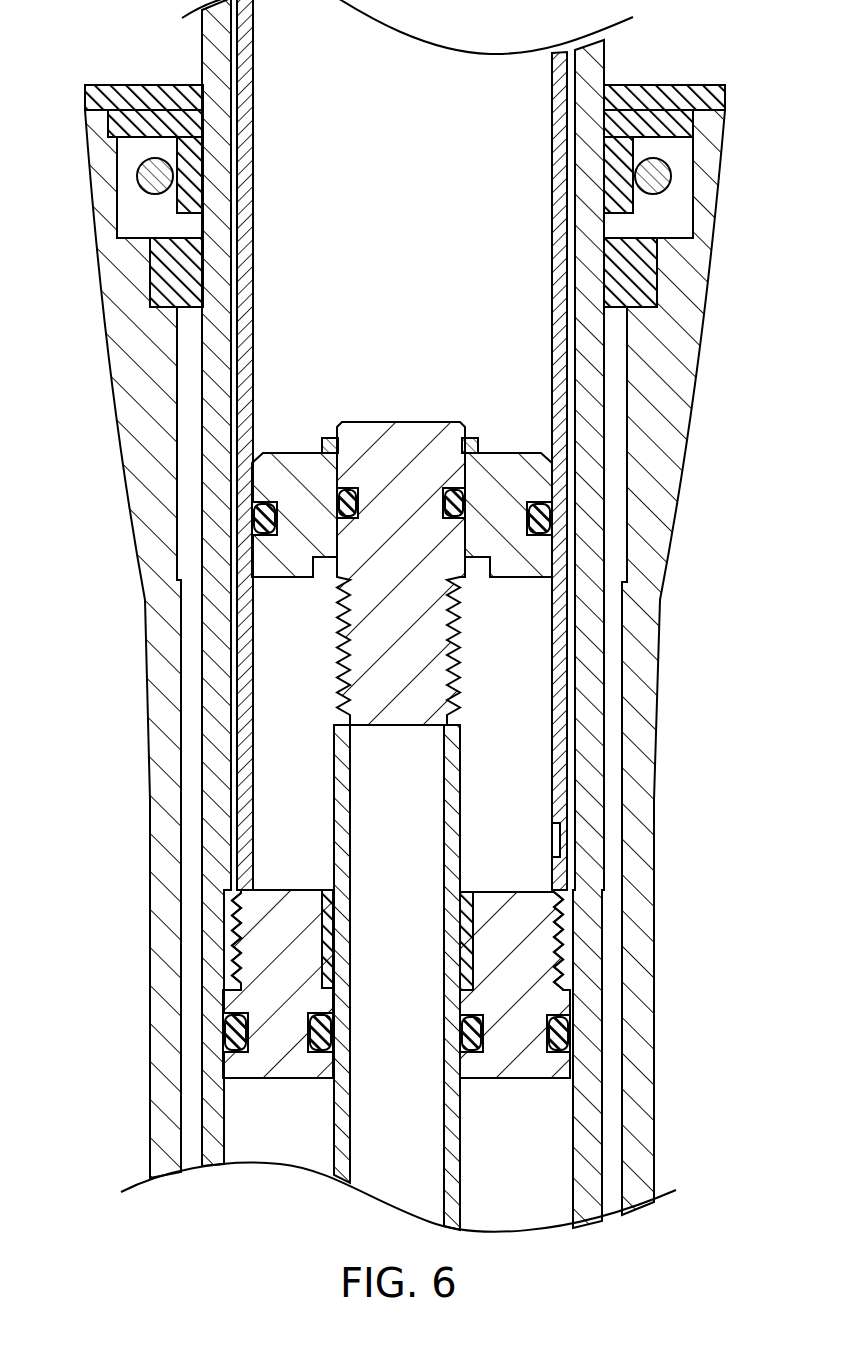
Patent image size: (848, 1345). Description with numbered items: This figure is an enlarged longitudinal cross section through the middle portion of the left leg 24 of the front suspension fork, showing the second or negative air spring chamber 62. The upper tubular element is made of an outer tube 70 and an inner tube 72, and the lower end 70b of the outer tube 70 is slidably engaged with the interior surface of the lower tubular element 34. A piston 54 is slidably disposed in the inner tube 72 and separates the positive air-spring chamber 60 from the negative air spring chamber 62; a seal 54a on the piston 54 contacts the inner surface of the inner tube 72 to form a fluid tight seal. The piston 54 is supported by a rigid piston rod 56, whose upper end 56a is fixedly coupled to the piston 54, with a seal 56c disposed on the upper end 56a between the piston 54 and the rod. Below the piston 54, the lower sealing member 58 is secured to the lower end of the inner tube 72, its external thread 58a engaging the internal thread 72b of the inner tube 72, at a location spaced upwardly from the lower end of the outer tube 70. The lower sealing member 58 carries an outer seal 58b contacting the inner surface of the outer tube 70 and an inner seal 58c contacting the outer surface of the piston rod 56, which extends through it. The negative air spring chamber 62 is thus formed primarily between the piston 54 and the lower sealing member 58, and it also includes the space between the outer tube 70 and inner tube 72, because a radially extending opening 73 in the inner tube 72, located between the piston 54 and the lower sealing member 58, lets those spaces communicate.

The left leg 24 is at (123, 1011).
The lower tubular element 34 is at (137, 495).
The piston 54 is at (290, 584).
The seal 54a is at (560, 514).
The piston rod 56 is at (460, 1165).
The upper end of the piston rod 56a is at (400, 450).
The seal 56c is at (465, 511).
The lower sealing member 58 is at (275, 1085).
The external thread 58a is at (240, 927).
The outer seal 58b is at (573, 1038).
The inner seal 58c is at (484, 1044).
The positive air-spring chamber 60 is at (280, 368).
The negative air spring chamber 62 is at (275, 807).
The outer tube 70 is at (608, 725).
The lower end of the outer tube 70b is at (583, 1140).
The inner tube 72 is at (574, 665).
The internal thread 72b is at (545, 942).
The radially extending opening 73 is at (552, 840).